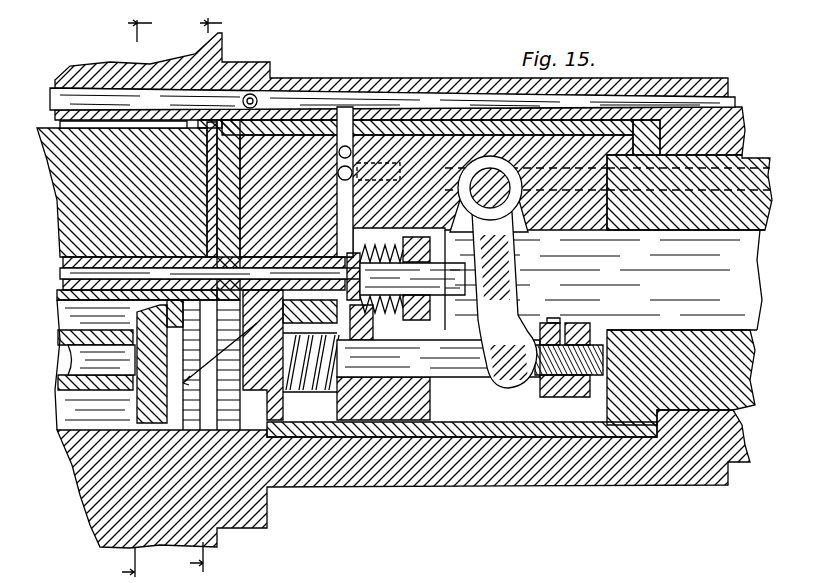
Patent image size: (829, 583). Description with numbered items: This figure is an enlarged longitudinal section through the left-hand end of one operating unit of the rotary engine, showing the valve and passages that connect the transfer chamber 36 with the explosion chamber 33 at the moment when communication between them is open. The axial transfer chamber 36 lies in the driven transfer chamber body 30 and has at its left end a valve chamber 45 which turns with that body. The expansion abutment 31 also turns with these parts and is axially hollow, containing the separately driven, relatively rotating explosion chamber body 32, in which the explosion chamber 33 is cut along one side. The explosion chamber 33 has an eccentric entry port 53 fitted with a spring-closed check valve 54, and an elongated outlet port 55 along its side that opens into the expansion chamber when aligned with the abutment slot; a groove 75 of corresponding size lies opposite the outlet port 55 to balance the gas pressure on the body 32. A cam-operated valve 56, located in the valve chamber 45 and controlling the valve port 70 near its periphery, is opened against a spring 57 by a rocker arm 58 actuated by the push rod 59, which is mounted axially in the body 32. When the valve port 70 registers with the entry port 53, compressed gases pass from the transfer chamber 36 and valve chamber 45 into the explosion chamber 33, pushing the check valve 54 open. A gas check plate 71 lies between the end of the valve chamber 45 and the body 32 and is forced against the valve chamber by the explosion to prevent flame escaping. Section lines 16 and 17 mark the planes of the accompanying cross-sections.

The section line 16- 16 is at (129, 300).
The section line 17- 17 is at (198, 295).
The transfer chamber body 30 is at (537, 473).
The expansion chamber abutment 31 is at (92, 488).
The explosion chamber body 32 is at (100, 147).
The explosion chamber 33 is at (62, 412).
The transfer chamber 36 is at (605, 280).
The valve chamber 45 is at (447, 390).
The entry port 53 is at (192, 432).
The spring-closed check valve 54 is at (147, 385).
The outlet port 55 is at (68, 425).
The cam-operated valve 56 is at (280, 395).
The spring 57 is at (320, 385).
The rocker arm 58 is at (507, 388).
The push rod 59 is at (62, 262).
The valve port 70 is at (210, 380).
The gas check plate 71 is at (243, 395).
The groove 75 is at (62, 124).